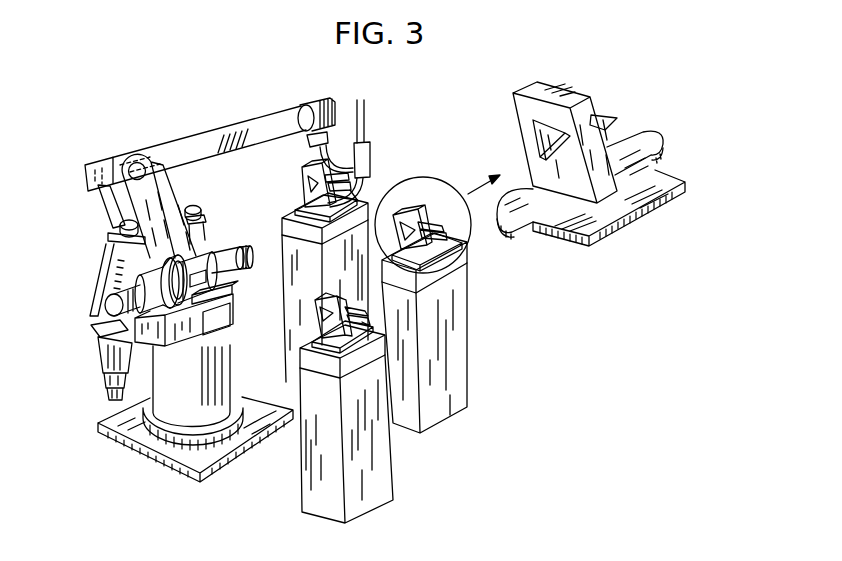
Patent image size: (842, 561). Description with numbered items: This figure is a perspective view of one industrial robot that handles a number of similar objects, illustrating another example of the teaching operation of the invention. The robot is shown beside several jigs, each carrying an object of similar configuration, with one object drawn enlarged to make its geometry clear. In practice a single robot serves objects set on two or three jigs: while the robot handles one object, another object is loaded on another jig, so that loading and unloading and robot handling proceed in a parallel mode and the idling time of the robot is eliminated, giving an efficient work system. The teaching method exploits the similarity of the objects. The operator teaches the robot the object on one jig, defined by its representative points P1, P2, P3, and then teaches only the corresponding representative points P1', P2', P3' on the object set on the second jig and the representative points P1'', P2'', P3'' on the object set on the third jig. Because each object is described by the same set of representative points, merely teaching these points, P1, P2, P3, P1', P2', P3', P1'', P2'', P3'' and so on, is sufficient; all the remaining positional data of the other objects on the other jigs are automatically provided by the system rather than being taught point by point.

The representative point P1 is at (552, 140).
The representative point P2 is at (622, 208).
The representative point P3 is at (580, 202).
The representative point P1' is at (309, 313).
The representative point P2' is at (409, 305).
The representative point P3' is at (341, 374).
The representative point P1'' is at (295, 180).
The representative point P2'' is at (389, 173).
The representative point P3'' is at (322, 237).